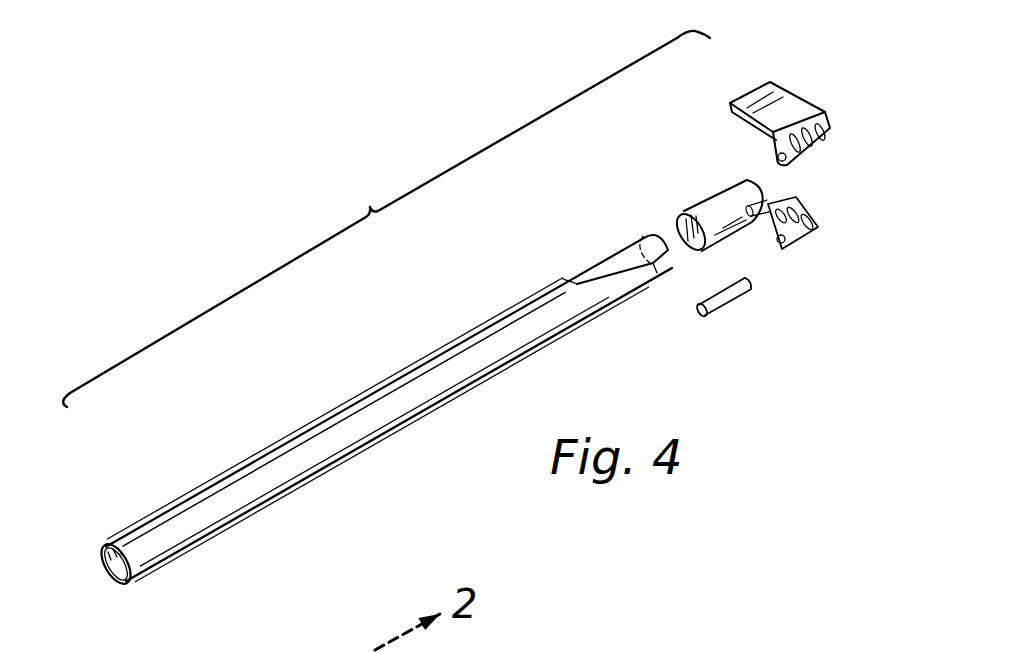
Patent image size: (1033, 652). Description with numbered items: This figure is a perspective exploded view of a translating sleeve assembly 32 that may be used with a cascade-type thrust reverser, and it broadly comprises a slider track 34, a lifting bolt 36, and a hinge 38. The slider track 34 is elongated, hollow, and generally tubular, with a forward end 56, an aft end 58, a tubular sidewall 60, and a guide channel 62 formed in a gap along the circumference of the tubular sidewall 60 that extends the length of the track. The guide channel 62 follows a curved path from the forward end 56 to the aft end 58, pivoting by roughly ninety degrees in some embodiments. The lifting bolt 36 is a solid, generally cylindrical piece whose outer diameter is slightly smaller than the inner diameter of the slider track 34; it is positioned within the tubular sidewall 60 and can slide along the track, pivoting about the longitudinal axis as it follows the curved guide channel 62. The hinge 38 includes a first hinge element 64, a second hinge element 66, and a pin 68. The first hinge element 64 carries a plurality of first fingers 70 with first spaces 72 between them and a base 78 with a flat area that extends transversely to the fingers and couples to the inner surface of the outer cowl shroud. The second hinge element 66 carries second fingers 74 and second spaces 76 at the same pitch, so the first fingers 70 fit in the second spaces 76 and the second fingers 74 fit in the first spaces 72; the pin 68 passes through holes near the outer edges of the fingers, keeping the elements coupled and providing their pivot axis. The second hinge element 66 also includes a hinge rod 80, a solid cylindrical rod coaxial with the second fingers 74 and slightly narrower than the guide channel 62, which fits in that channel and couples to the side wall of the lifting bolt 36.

The translating sleeve assembly 32 is at (355, 187).
The slider track 34 is at (381, 405).
The lifting bolt 36 is at (701, 196).
The hinge 38 is at (782, 115).
The forward end 56 is at (630, 220).
The aft end 58 is at (105, 590).
The tubular sidewall 60 is at (230, 512).
The guide channel 62 is at (570, 280).
The first hinge element 64 is at (830, 137).
The second hinge element 66 is at (825, 267).
The pin 68 is at (733, 297).
The first fingers 70 is at (817, 153).
The first spaces 72 is at (827, 132).
The second fingers 74 is at (800, 240).
The second spaces 76 is at (807, 213).
The base 78 is at (762, 95).
The hinge rod 80 is at (737, 190).